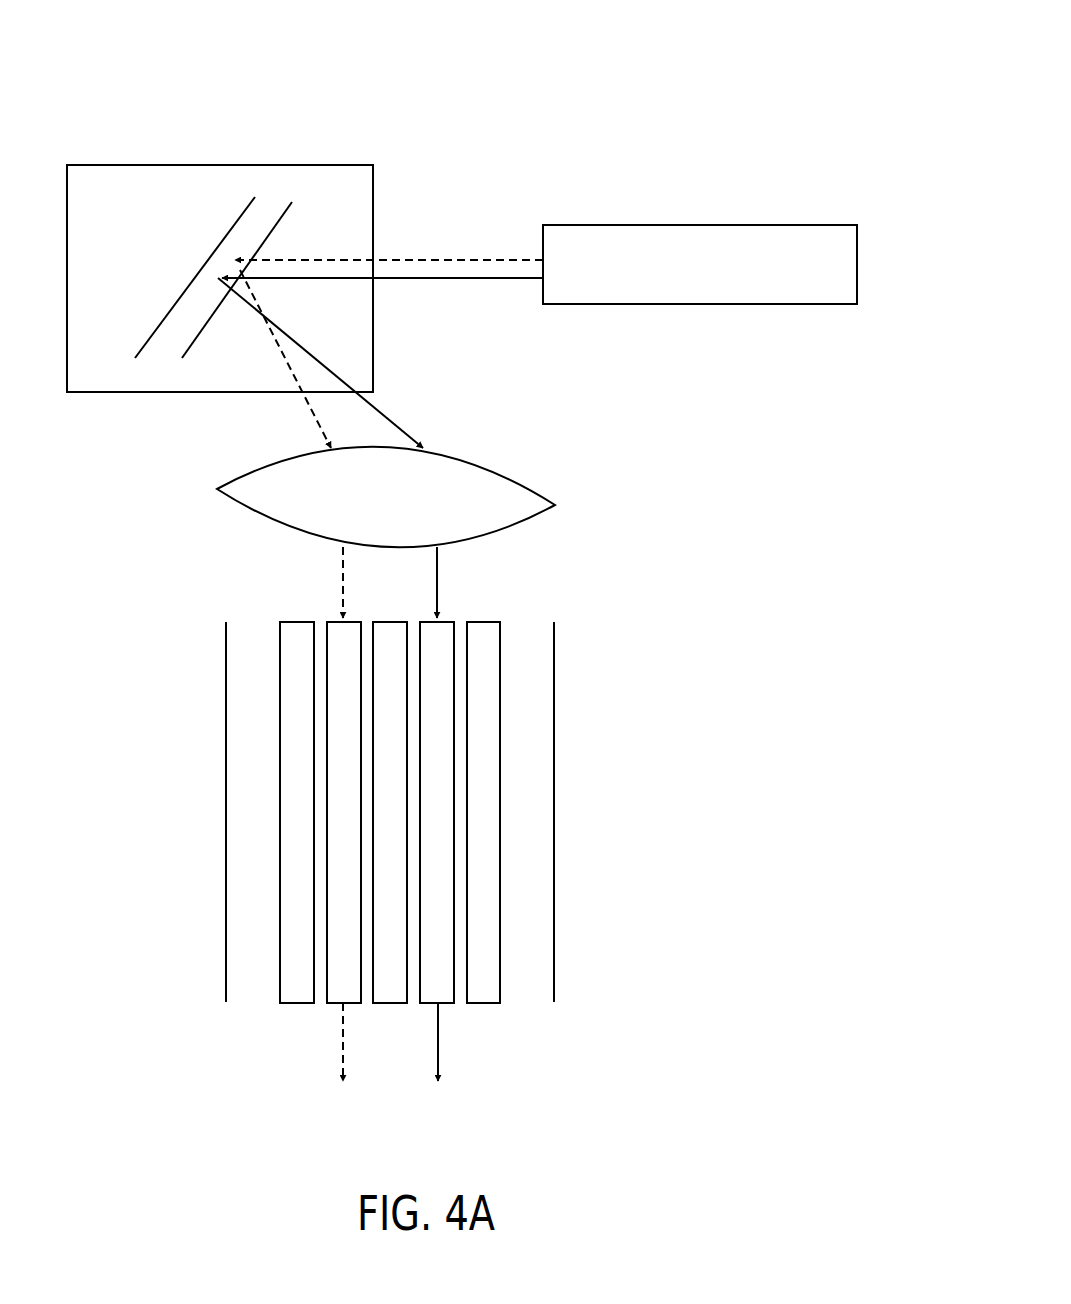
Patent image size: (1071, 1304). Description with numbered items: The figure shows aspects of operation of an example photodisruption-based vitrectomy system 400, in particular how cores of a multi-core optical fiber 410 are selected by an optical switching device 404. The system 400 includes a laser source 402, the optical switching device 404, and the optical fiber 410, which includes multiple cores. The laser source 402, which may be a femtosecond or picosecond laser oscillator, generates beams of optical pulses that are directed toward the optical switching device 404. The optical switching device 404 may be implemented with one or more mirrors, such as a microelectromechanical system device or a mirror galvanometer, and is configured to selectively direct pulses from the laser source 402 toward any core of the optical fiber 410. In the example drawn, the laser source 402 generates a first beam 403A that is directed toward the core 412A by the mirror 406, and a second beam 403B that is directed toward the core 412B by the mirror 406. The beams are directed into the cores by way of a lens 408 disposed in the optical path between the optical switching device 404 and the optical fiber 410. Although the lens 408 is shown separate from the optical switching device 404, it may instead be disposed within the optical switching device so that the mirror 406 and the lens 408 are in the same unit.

The photodisruption-based vitrectomy system 400 is at (667, 87).
The laser source 402 is at (780, 225).
The first beam 403A is at (463, 256).
The second beam 403B is at (400, 278).
The optical switching device 404 is at (173, 165).
The mirror 406 is at (183, 310).
The lens 408 is at (490, 460).
The multi-core optical fiber 410 is at (555, 722).
The core 412A is at (335, 620).
The core 412B is at (445, 620).